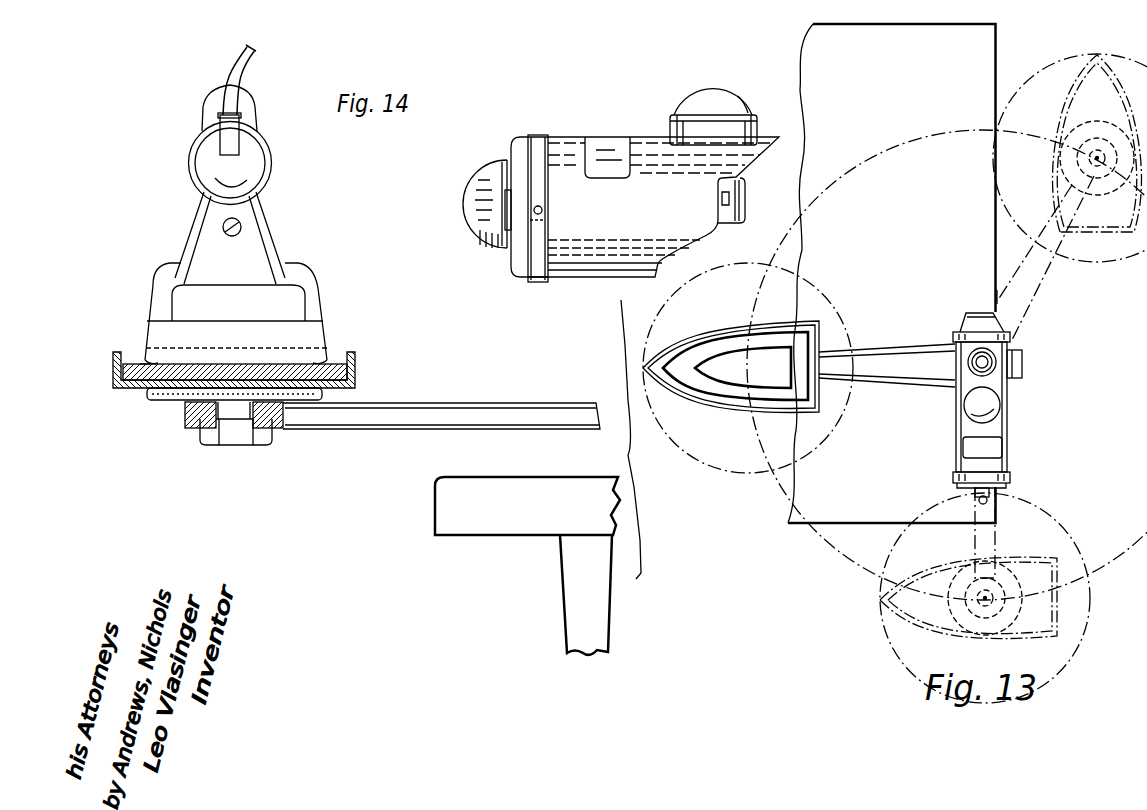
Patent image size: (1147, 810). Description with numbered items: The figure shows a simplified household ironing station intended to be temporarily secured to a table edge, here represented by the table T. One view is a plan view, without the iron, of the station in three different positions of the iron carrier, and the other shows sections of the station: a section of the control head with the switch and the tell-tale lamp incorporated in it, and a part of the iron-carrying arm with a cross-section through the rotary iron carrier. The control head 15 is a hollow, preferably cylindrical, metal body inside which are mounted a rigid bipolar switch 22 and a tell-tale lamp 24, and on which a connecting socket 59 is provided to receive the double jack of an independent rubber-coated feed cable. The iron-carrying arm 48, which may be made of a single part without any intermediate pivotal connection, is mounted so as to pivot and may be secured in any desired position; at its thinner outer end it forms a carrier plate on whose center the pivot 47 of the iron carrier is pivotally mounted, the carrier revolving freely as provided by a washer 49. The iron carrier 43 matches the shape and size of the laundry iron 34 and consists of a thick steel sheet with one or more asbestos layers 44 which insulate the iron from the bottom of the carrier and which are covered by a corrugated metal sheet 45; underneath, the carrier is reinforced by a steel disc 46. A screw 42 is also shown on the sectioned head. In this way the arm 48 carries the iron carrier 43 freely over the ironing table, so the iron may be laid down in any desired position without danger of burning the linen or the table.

In FIG. 14, the control head 15 is at (598, 280).
In FIG. 13, the control head 15 is at (1010, 433).
In FIG. 14, the bipolar switch 22 is at (468, 203).
In FIG. 13, the bipolar switch 22 is at (992, 500).
In FIG. 14, the tell-tale lamp 24 is at (712, 108).
In FIG. 13, the tell-tale lamp 24 is at (994, 406).
In FIG. 14, the laundry iron 34 is at (272, 307).
In FIG. 14, the screw 42 is at (250, 223).
In FIG. 14, the iron carrier 43 is at (348, 368).
In FIG. 13, the iron carrier 43 is at (702, 358).
In FIG. 14, the asbestos layers 44 is at (335, 364).
In FIG. 14, the corrugated metal sheet 45 is at (140, 362).
In FIG. 14, the steel disc 46 is at (150, 398).
In FIG. 14, the pivot 47 is at (190, 427).
In FIG. 14, the iron-carrying arm 48 is at (367, 415).
In FIG. 13, the iron-carrying arm 48 is at (898, 365).
In FIG. 14, the washer 49 is at (274, 431).
In FIG. 13, the connecting socket 59 is at (1026, 364).
In FIG. 14, the table T is at (517, 522).